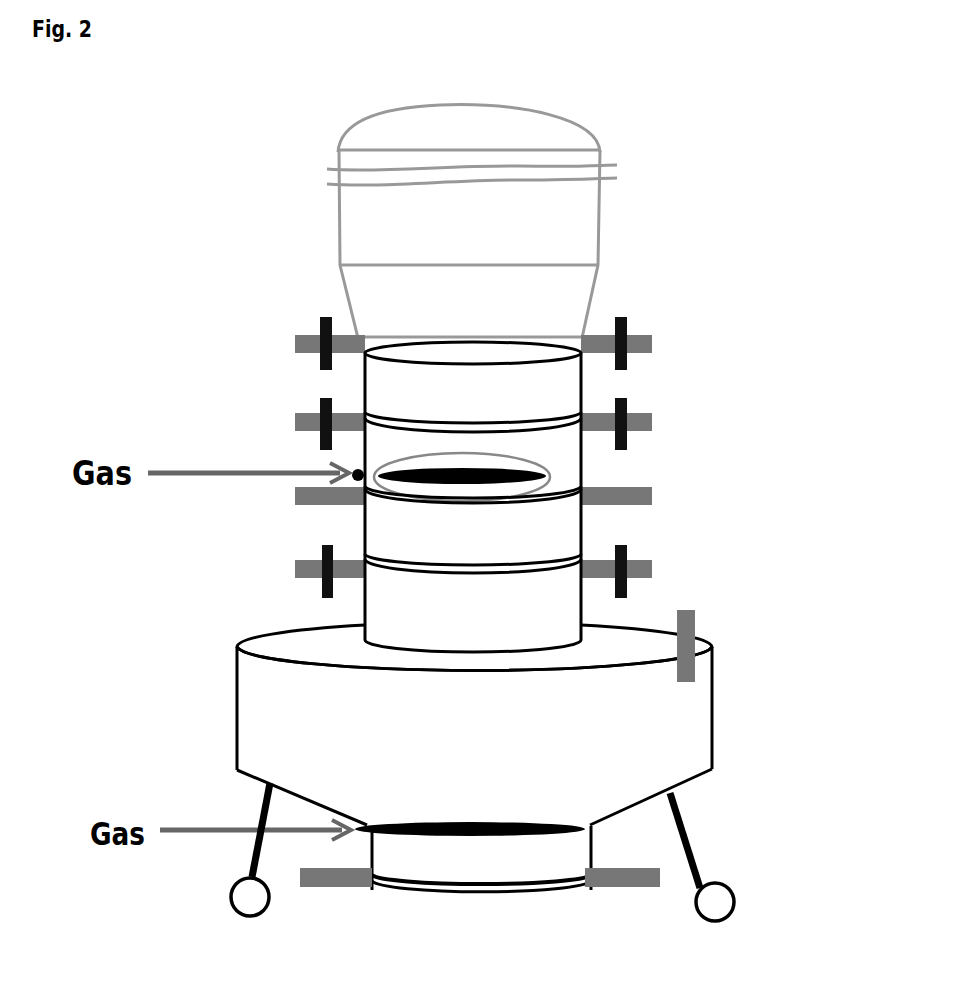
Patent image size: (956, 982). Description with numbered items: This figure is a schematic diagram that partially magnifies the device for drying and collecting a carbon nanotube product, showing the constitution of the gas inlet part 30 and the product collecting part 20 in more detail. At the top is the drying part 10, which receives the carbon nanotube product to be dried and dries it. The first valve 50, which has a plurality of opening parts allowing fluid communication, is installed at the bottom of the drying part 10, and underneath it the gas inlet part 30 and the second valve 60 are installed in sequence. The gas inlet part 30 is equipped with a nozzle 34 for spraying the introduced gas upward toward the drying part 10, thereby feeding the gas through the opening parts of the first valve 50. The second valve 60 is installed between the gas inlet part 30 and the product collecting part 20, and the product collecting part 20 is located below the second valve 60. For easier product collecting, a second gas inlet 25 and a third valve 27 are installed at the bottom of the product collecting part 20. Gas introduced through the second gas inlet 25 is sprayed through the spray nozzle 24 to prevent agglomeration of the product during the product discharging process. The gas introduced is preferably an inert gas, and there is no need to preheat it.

The drying part 10 is at (560, 204).
The first valve 50 is at (552, 383).
The gas inlet part 30 is at (552, 462).
The nozzle 34 is at (360, 468).
The second valve 60 is at (552, 535).
The product collecting part 20 is at (333, 742).
The spray nozzle 24 is at (477, 821).
The third valve 27 is at (553, 857).
The second gas inlet 25 is at (213, 837).